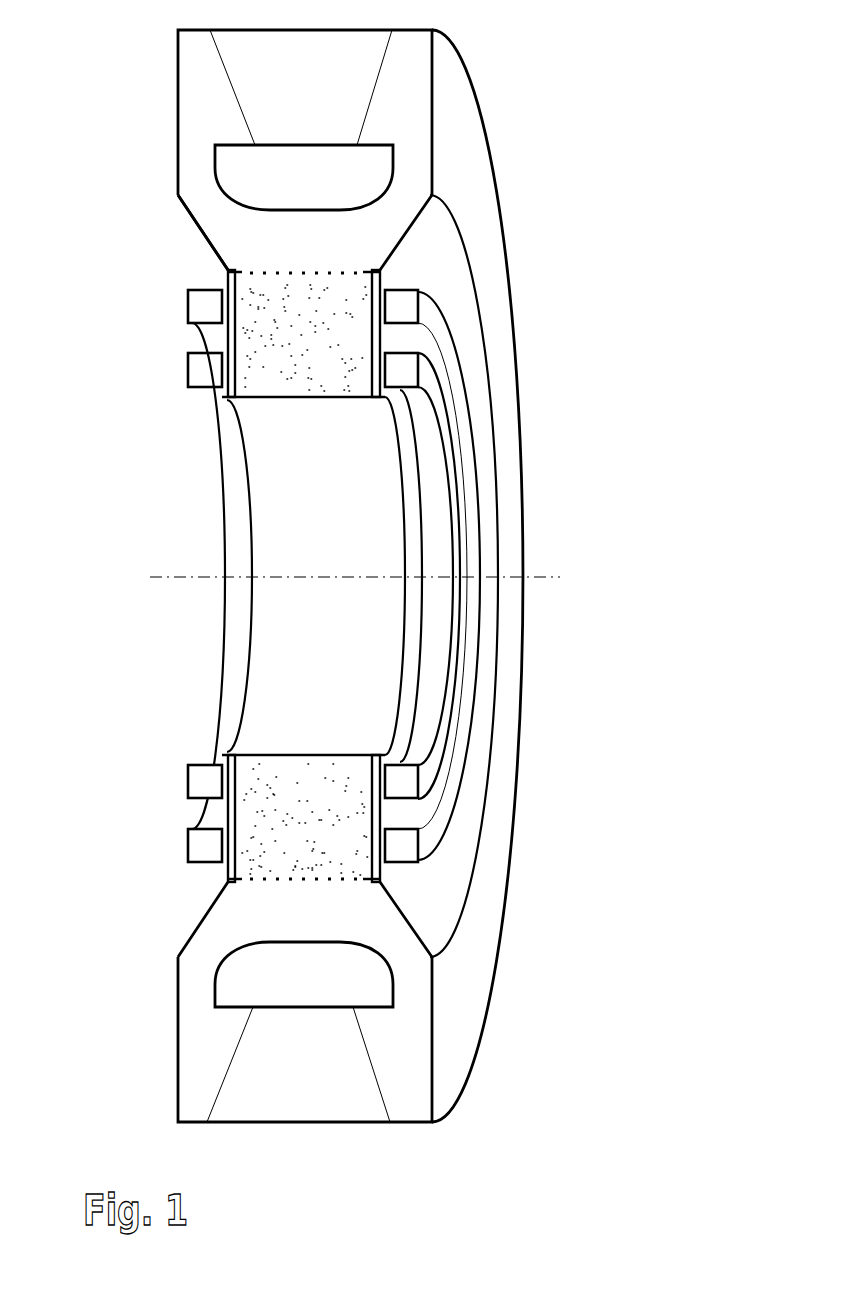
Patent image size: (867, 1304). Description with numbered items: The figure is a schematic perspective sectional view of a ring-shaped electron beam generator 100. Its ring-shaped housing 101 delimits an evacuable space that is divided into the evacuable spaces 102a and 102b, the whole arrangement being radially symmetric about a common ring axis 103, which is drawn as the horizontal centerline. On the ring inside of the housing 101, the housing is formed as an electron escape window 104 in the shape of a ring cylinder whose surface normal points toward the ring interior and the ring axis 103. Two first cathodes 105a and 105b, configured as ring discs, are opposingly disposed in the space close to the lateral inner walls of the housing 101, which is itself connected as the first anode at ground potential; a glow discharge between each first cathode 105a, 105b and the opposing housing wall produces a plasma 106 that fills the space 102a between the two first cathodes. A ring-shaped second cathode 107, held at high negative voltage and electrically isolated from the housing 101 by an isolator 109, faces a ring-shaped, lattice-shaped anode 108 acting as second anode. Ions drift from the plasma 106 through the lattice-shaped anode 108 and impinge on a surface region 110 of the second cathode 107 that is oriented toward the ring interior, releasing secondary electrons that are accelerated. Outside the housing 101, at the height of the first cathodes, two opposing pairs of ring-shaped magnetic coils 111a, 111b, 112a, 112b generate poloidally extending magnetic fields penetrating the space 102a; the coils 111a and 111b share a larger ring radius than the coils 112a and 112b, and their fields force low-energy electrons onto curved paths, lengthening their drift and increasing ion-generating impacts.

The ring-shaped electron beam generator 100 is at (556, 1002).
The ring-shaped housing 101 is at (433, 113).
The evacuable space 102a is at (272, 298).
The evacuable space 102b is at (267, 228).
The ring axis 103 is at (563, 577).
The electron escape window 104 is at (287, 400).
The first cathode 105a is at (297, 322).
The first cathode 105b is at (237, 375).
The plasma 106 is at (300, 318).
The second cathode 107 is at (395, 172).
The lattice-shaped anode 108 is at (383, 265).
The isolator 109 is at (381, 90).
The surface region 110 is at (287, 942).
The magnetic coil 111a is at (420, 768).
The magnetic coil 111b is at (187, 783).
The magnetic coil 112a is at (433, 828).
The magnetic coil 112b is at (185, 840).